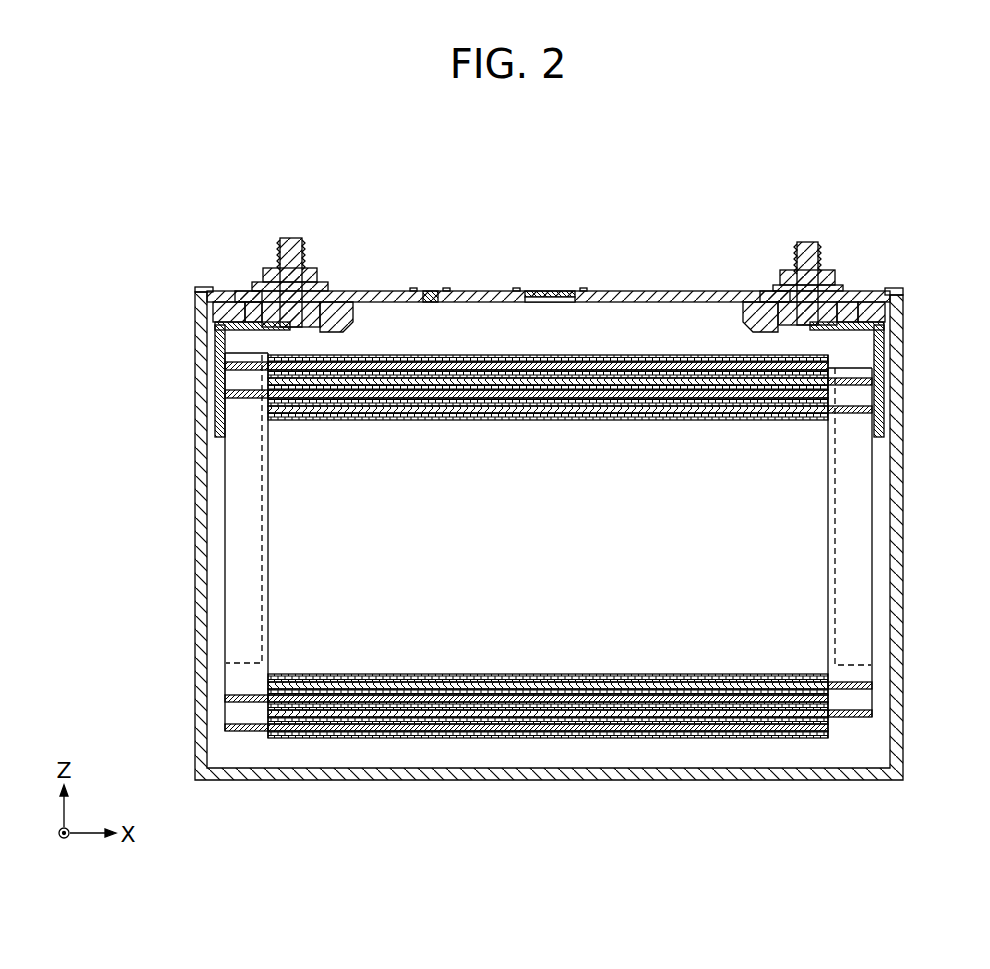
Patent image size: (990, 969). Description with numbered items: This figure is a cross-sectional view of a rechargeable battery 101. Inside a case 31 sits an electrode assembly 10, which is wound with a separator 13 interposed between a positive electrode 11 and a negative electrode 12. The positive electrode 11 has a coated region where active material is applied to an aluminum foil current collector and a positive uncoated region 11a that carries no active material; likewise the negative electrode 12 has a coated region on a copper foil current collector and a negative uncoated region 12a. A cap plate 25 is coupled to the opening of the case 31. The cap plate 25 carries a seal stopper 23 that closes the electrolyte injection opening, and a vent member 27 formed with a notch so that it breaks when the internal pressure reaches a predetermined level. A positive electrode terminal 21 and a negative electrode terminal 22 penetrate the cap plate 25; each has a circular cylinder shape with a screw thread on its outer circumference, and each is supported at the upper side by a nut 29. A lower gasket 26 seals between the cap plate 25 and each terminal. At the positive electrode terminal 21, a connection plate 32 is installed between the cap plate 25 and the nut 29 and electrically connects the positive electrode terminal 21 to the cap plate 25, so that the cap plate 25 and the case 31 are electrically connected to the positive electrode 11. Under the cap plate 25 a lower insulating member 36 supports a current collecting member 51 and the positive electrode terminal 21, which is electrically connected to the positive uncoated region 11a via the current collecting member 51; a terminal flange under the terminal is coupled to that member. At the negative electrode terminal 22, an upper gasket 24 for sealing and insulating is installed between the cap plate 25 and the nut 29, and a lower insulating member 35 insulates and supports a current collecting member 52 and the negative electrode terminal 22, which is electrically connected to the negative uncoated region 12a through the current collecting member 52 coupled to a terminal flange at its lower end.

The rechargeable battery 101 is at (521, 155).
The electrode assembly 10 is at (550, 601).
The positive electrode 11 is at (367, 731).
The positive uncoated region 11a is at (245, 733).
The negative electrode 12 is at (437, 717).
The negative uncoated region 12a is at (850, 717).
The separator 13 is at (561, 706).
The positive electrode terminal 21 is at (291, 240).
The negative electrode terminal 22 is at (807, 242).
The seal stopper 23 is at (431, 290).
The upper gasket 24 is at (845, 297).
The cap plate 25 is at (679, 296).
The lower gasket 26 is at (246, 297).
The vent member 27 is at (535, 291).
The nut 29 is at (266, 284).
The case 31 is at (729, 780).
The connection plate 32 is at (250, 303).
The lower insulating member 35 is at (882, 310).
The lower insulating member 36 is at (218, 312).
The current collecting member 51 is at (205, 346).
The current collecting member 52 is at (895, 346).